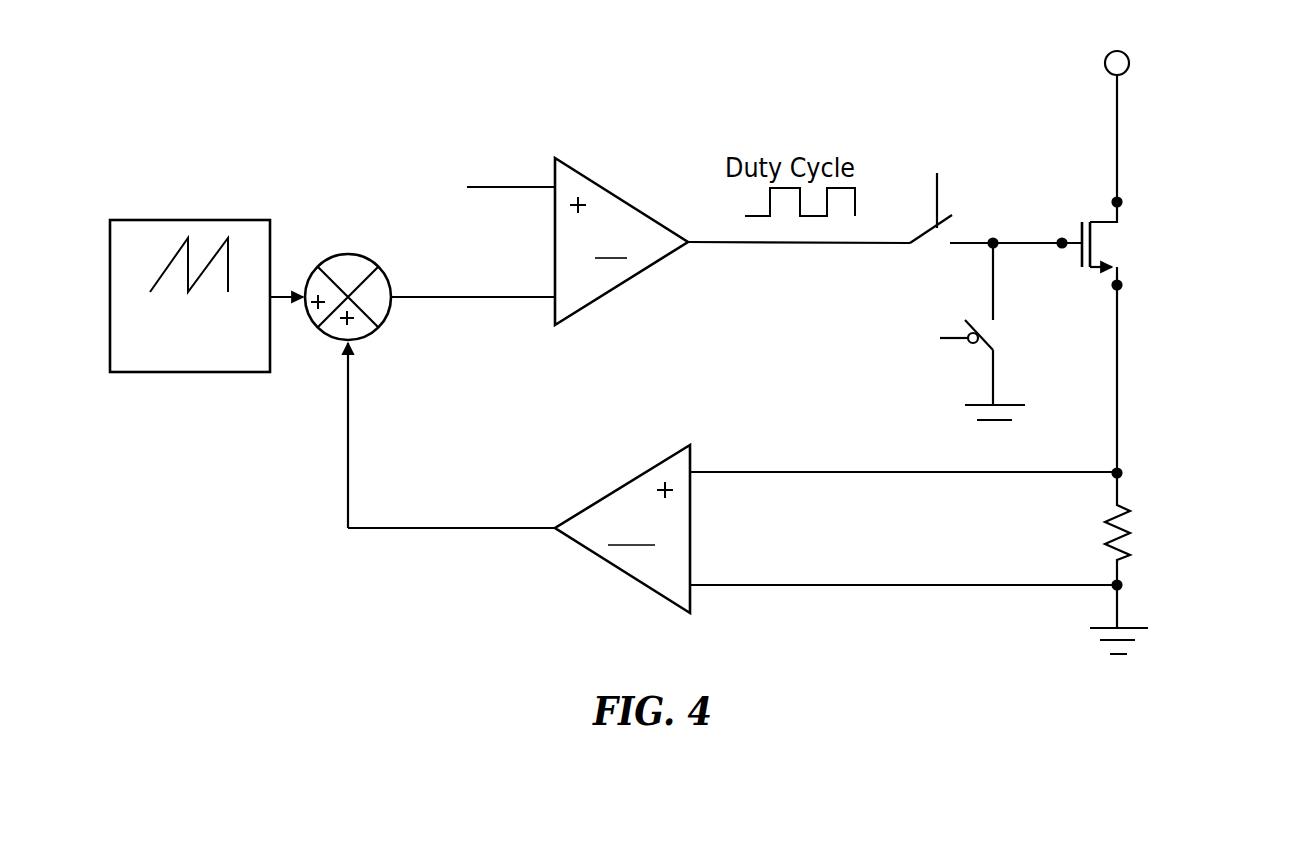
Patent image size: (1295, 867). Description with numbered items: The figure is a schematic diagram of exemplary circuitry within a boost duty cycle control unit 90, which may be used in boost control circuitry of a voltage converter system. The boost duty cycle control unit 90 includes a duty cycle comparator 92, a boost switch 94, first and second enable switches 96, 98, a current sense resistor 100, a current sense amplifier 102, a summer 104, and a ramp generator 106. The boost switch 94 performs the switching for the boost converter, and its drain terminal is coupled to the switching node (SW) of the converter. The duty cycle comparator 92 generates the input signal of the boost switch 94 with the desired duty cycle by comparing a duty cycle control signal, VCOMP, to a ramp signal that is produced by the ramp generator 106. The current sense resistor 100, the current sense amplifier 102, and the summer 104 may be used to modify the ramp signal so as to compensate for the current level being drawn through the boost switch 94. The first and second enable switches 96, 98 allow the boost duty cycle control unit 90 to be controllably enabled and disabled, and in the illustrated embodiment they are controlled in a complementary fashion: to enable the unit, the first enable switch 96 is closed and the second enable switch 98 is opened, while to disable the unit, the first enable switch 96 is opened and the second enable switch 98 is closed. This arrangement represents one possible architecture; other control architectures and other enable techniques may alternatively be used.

The boost duty cycle control unit 90 is at (270, 48).
The duty cycle comparator 92 is at (519, 212).
The boost switch 94 is at (1102, 220).
The first enable switch 96 is at (928, 226).
The second enable switch 98 is at (990, 343).
The current sense resistor 100 is at (1125, 553).
The current sense amplifier 102 is at (732, 510).
The summer 104 is at (368, 258).
The ramp generator 106 is at (180, 220).